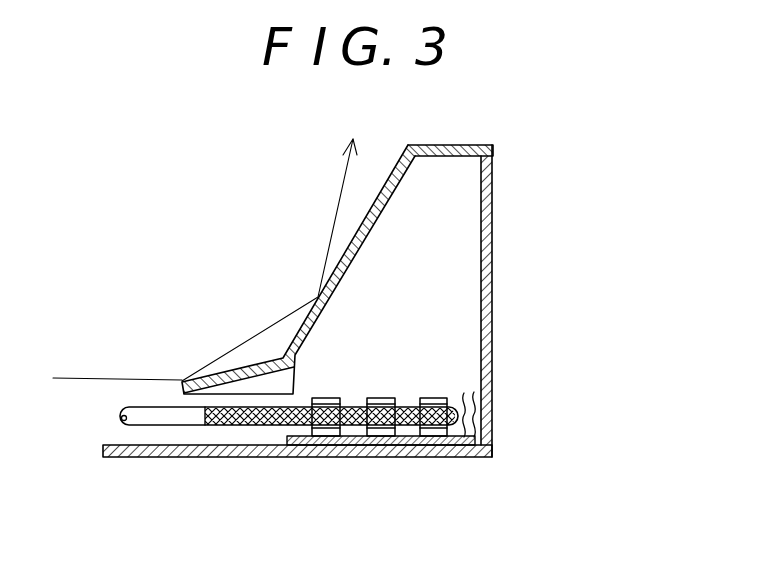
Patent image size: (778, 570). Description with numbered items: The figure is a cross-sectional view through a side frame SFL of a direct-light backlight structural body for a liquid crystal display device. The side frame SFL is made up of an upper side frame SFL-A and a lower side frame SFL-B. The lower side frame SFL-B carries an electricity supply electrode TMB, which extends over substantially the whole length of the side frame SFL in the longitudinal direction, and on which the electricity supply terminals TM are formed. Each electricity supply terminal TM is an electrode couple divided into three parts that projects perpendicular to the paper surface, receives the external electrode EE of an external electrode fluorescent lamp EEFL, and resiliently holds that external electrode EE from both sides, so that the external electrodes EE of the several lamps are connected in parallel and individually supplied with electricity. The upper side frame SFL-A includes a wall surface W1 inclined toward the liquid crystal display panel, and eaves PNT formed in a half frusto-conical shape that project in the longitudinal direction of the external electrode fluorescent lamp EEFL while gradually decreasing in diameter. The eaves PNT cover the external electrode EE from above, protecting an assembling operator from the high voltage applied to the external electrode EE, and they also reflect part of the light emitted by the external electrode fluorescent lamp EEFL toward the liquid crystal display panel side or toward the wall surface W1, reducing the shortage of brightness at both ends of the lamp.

The side frame SFL is at (549, 281).
The upper side frame SFL-A is at (462, 145).
The lower side frame SFL-B is at (497, 230).
The eaves PNT is at (260, 362).
The wall surface W1 is at (362, 226).
The external electrode fluorescent lamp EEFL is at (266, 401).
The external electrode EE is at (253, 426).
The electricity supply electrode TMB is at (351, 445).
The electricity supply terminal TM is at (432, 420).